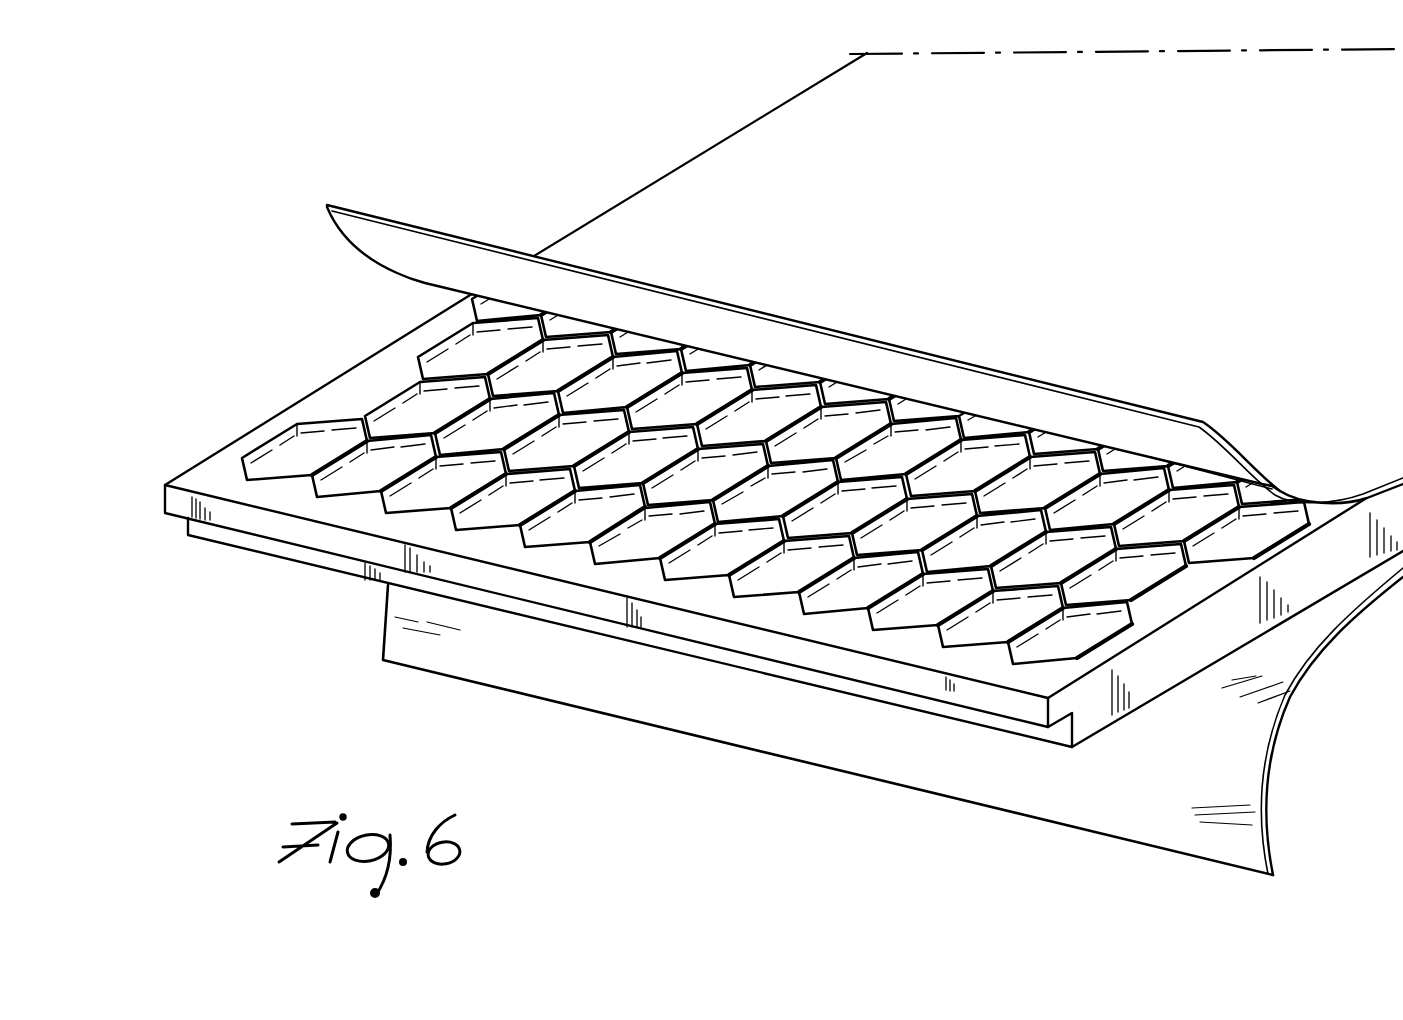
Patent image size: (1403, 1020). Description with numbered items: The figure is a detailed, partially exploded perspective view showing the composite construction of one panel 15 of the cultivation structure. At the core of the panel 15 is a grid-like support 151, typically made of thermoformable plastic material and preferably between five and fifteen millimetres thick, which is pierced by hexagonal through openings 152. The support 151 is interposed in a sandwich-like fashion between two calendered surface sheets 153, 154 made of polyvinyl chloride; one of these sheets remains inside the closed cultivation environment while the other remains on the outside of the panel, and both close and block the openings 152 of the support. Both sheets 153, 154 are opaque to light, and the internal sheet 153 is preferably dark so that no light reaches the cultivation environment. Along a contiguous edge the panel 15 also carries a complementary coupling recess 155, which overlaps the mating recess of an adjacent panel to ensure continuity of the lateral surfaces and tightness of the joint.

The panel 15 is at (690, 156).
The grid-like support 151 is at (223, 470).
The hexagonal through openings 152 is at (278, 470).
The internal surface sheet 153 is at (546, 684).
The surface sheet 154 is at (413, 247).
The coupling recess 155 is at (1058, 733).